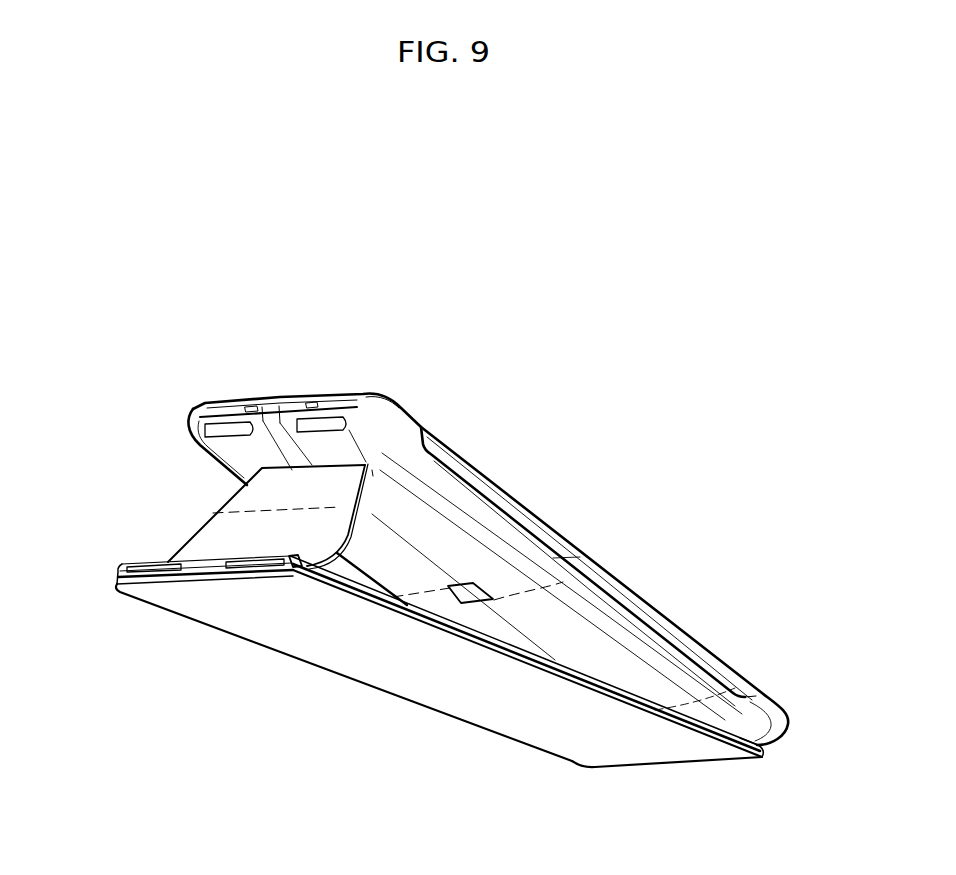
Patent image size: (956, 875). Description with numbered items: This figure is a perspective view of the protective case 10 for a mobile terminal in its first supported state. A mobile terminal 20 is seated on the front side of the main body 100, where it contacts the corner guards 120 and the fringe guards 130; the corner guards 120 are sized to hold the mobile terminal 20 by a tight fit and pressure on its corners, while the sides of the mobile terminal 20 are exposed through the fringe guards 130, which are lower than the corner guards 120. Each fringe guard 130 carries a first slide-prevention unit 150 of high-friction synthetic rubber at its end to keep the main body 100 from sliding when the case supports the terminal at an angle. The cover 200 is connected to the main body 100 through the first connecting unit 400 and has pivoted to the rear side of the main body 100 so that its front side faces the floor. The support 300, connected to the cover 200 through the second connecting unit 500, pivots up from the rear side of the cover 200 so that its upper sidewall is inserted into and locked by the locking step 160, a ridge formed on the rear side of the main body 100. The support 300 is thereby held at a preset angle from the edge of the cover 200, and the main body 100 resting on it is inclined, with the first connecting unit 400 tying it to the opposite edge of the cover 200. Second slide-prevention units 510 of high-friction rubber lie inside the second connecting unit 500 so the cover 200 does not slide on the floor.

The protective case 10 is at (701, 778).
The mobile terminal 20 is at (546, 514).
The main body 100 is at (611, 658).
The corner guards 120 is at (385, 408).
The fringe guards 130 is at (563, 582).
The first slide-prevention unit 150 is at (213, 431).
The locking step 160 is at (372, 473).
The cover 200 is at (456, 689).
The support 300 is at (213, 537).
The first connecting unit 400 is at (765, 745).
The second connecting unit 500 is at (117, 573).
The second slide-prevention units 510 is at (150, 561).